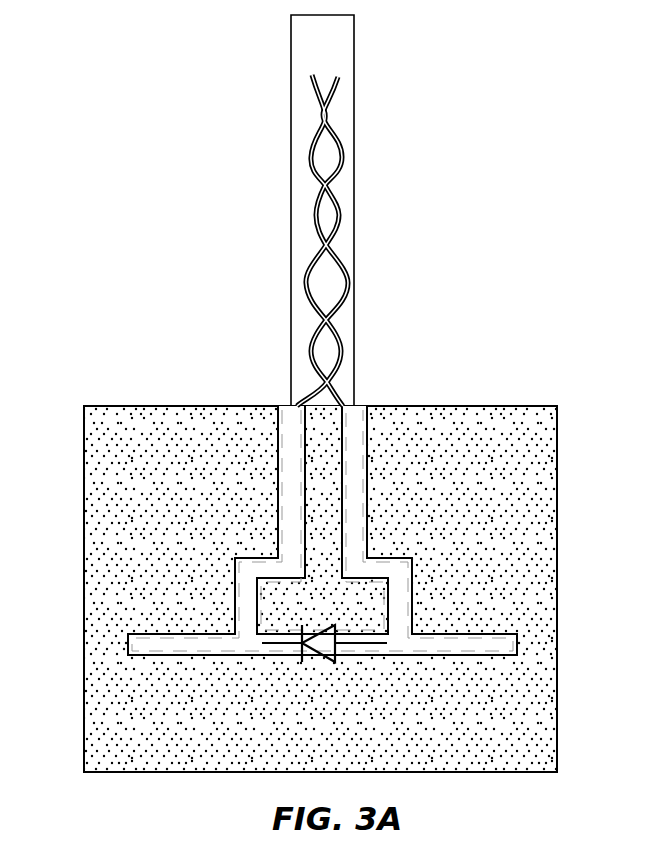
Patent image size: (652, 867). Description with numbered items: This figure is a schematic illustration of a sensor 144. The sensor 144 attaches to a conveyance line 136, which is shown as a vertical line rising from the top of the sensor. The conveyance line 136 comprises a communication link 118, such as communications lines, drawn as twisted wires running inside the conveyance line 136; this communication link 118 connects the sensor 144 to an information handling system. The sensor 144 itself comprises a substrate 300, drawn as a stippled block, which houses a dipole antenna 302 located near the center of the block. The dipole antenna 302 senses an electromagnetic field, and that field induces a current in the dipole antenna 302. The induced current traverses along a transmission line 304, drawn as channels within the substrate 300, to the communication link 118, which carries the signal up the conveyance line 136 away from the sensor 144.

The sensor 144 is at (475, 83).
The conveyance line 136 is at (347, 220).
The communication link 118 is at (324, 240).
The substrate 300 is at (434, 436).
The transmission line 304 is at (252, 567).
The dipole antenna 302 is at (347, 646).